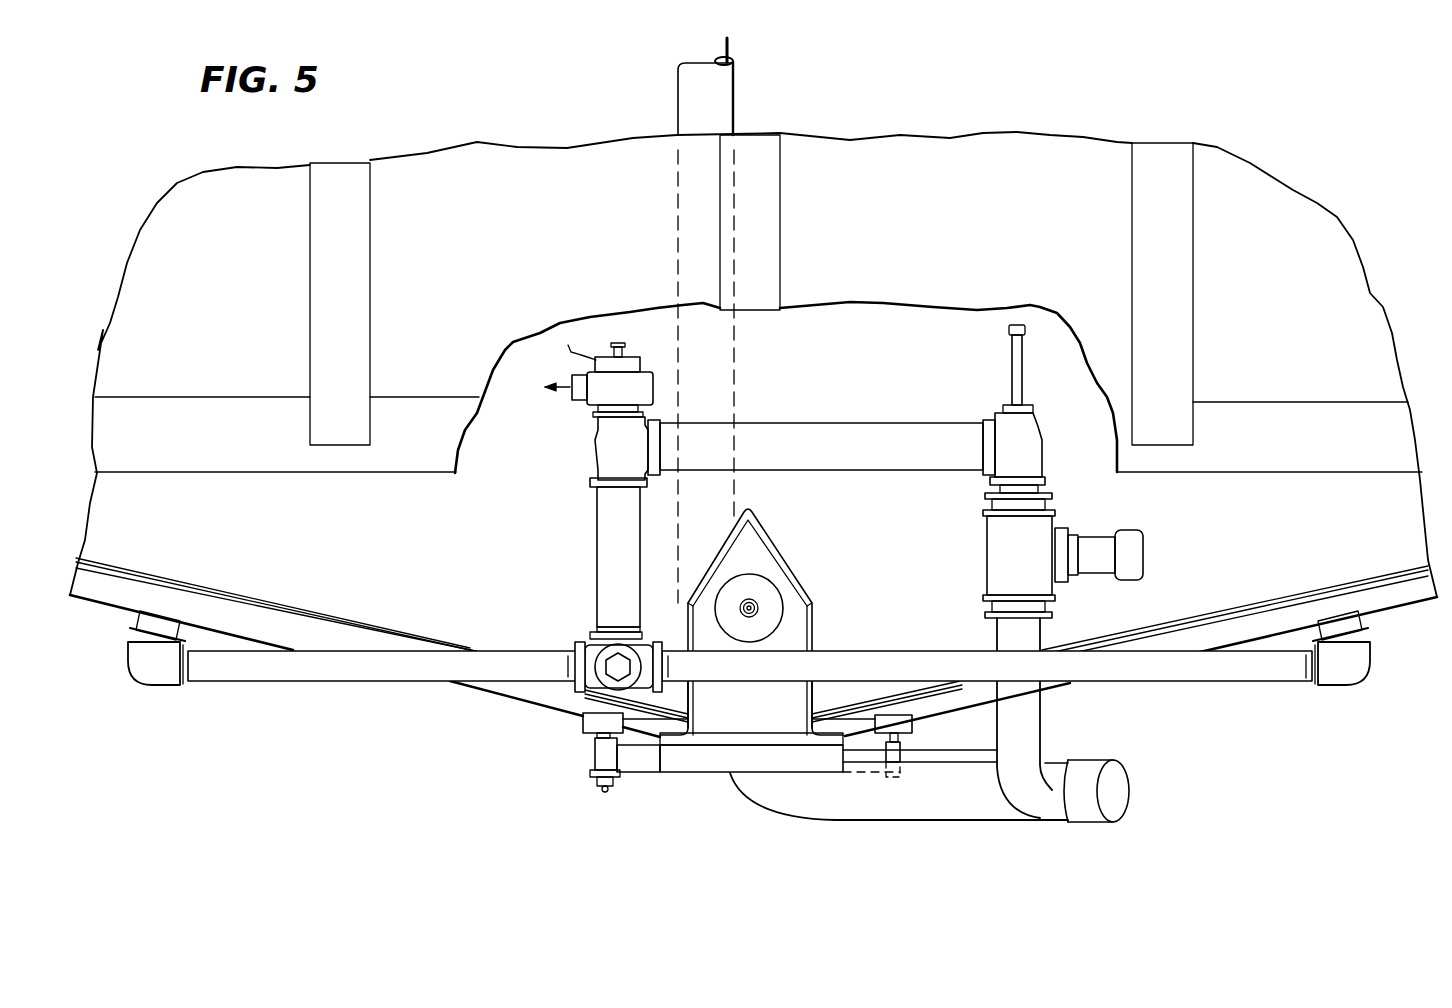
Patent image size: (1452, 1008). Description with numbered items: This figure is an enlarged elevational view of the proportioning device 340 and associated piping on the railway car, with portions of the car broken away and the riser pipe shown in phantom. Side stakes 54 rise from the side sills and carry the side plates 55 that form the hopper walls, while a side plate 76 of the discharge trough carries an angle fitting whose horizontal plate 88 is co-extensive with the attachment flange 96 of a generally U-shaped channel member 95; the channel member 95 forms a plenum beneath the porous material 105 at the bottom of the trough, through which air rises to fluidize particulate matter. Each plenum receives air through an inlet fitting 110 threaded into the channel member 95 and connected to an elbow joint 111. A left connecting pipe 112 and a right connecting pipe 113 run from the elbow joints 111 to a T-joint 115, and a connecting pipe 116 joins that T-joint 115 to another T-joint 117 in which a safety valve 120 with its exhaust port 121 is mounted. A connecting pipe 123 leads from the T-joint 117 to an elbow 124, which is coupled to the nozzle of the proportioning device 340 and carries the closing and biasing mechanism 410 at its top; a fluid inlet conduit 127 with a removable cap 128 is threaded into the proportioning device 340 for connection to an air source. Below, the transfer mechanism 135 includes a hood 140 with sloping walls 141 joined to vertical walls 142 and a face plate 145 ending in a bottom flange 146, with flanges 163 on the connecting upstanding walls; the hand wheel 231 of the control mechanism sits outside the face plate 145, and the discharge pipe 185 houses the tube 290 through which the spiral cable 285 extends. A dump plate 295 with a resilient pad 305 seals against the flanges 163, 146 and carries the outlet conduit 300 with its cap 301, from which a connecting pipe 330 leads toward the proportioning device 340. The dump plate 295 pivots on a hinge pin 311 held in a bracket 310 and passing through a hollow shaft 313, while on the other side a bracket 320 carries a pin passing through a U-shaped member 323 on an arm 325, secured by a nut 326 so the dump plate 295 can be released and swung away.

The side stake 54 is at (367, 270).
The side plate 55 is at (224, 267).
The side plate of discharge trough 76 is at (409, 523).
The horizontal plate 88 is at (215, 592).
The channel member 95 is at (513, 694).
The attachment flange 96 is at (148, 584).
The porous material 105 is at (340, 622).
The inlet fitting 110 is at (137, 619).
The elbow joint 111 is at (142, 673).
The connecting pipe 112 is at (394, 672).
The connecting pipe 113 is at (1198, 678).
The T-joint 115 is at (596, 648).
The connecting pipe 116 is at (610, 522).
The T-joint 117 is at (612, 448).
The safety valve 120 is at (592, 376).
The exhaust port 121 is at (580, 391).
The connecting pipe 123 is at (830, 437).
The elbow 124 is at (1030, 460).
The fluid inlet conduit 127 is at (1096, 568).
The removable cap 128 is at (1131, 550).
The transfer mechanism 135 is at (788, 490).
The hood 140 is at (795, 565).
The sloping wall 141 is at (718, 547).
The vertical wall 142 is at (813, 632).
The face plate 145 is at (765, 563).
The bottom flange 146 is at (778, 740).
The outwardly extending flange 163 is at (681, 746).
The discharge pipe 185 is at (690, 103).
The hand wheel 231 is at (782, 606).
The spiral cable 285 is at (730, 40).
The tube 290 is at (735, 62).
The dump plate 295 is at (812, 764).
The outlet conduit 300 is at (951, 816).
The cap 301 is at (1094, 824).
The resilient pad 305 is at (740, 746).
The bracket 310 is at (913, 723).
The hinge pin 311 is at (904, 737).
The hollow shaft 313 is at (899, 760).
The bracket 320 is at (583, 724).
The U-shaped member 323 is at (600, 758).
The arm 325 is at (641, 770).
The nut 326 is at (605, 783).
The connecting pipe 330 is at (1026, 729).
The proportioning device 340 is at (1060, 505).
The closing and biasing mechanism 410 is at (998, 375).